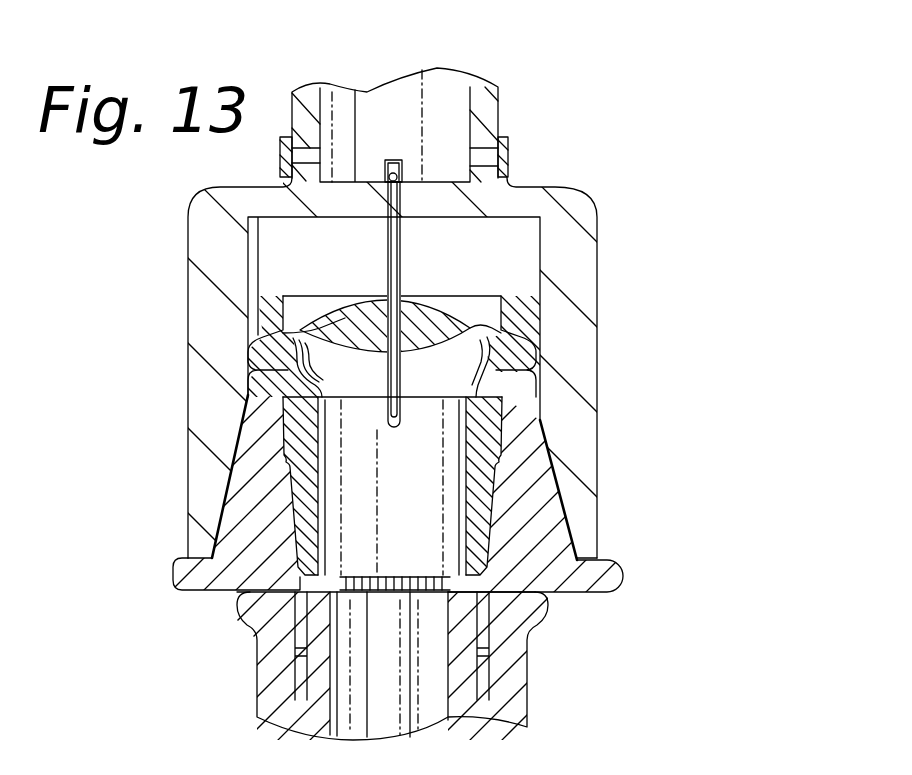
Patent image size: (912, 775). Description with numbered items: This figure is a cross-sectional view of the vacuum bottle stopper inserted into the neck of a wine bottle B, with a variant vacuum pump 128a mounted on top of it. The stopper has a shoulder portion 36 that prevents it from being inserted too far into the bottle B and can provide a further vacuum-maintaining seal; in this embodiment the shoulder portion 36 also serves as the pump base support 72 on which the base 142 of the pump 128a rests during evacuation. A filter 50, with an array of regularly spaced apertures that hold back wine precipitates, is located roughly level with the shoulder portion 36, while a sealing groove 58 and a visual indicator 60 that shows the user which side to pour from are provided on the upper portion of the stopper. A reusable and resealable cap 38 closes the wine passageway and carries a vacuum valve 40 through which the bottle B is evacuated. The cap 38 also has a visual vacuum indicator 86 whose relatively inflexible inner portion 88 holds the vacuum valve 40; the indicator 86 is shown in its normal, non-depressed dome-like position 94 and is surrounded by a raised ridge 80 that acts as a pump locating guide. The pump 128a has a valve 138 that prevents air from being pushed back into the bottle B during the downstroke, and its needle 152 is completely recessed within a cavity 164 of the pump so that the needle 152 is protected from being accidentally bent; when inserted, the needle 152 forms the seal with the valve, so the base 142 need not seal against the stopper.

The valve 138 is at (392, 160).
The pump 128a is at (517, 103).
The base 142 is at (598, 273).
The inner portion 88 is at (374, 292).
The vacuum valve 40 is at (375, 290).
The visual vacuum indicator 86 is at (411, 296).
The normal position 94 is at (430, 298).
The raised ridge 80 is at (500, 307).
The visual indicator 60 is at (477, 310).
The needle 152 is at (400, 377).
The cavity 164 is at (520, 480).
The cap 38 is at (429, 480).
The sealing groove 58 is at (283, 462).
The pump base support 72 is at (188, 552).
The shoulder portion 36 is at (616, 570).
The filter 50 is at (380, 588).
The wine bottle B is at (530, 684).